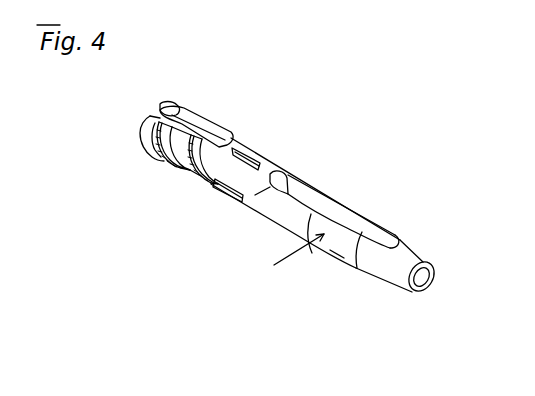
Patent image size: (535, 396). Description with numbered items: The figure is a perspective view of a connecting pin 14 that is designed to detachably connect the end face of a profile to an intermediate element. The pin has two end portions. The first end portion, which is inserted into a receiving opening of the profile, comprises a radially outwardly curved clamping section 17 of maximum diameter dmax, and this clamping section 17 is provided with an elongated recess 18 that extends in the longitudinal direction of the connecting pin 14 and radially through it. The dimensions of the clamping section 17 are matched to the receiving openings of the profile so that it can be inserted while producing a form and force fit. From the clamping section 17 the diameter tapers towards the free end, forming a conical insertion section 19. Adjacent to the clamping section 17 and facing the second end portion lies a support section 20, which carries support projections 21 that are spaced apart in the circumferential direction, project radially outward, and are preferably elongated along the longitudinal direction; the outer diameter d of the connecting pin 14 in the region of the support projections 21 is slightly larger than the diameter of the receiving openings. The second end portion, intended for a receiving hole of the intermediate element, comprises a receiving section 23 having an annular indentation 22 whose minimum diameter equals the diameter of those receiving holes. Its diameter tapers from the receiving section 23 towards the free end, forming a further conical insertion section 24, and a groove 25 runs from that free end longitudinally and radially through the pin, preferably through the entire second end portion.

The connecting pin 14 is at (320, 149).
The clamping section 17 is at (337, 257).
The elongated recess 18 is at (348, 219).
The conical insertion section 19 is at (407, 256).
The support section 20 is at (257, 212).
The support projections 21 is at (253, 146).
The annular indentation 22 is at (176, 160).
The receiving section 23 is at (209, 118).
The conical insertion section 24 is at (143, 143).
The groove 25 is at (177, 113).
The outer diameter d is at (266, 150).
The maximum diameter dmax is at (364, 206).